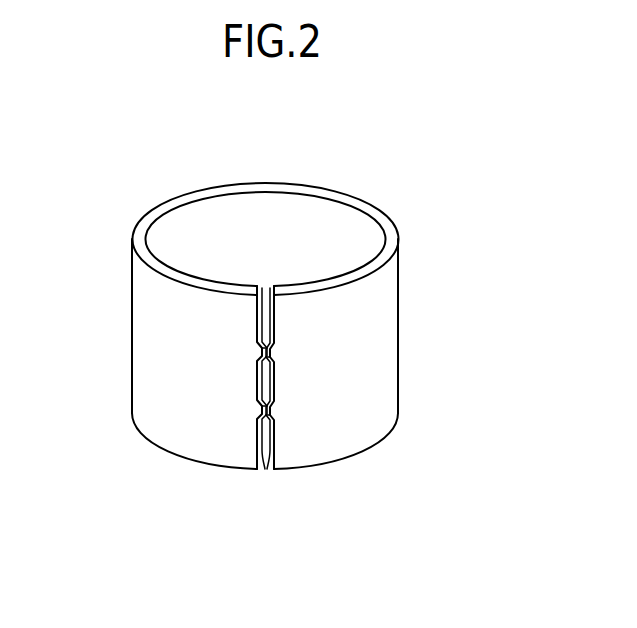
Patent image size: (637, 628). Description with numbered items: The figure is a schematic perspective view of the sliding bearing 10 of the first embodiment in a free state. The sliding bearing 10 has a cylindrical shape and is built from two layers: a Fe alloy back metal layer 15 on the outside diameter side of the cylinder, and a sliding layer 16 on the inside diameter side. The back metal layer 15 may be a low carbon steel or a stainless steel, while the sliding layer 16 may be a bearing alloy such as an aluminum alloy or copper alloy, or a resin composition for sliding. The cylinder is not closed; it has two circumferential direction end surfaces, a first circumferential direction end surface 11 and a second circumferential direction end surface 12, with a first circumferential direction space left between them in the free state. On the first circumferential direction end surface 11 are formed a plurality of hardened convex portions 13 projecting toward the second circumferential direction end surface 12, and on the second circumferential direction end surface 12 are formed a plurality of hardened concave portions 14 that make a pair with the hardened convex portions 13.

The sliding bearing 10 is at (291, 151).
The first circumferential direction end surface 11 is at (263, 452).
The second circumferential direction end surface 12 is at (269, 452).
The hardened convex portion 13 is at (257, 357).
The hardened concave portion 14 is at (274, 357).
The Fe alloy back metal layer 15 is at (373, 298).
The sliding layer 16 is at (331, 220).